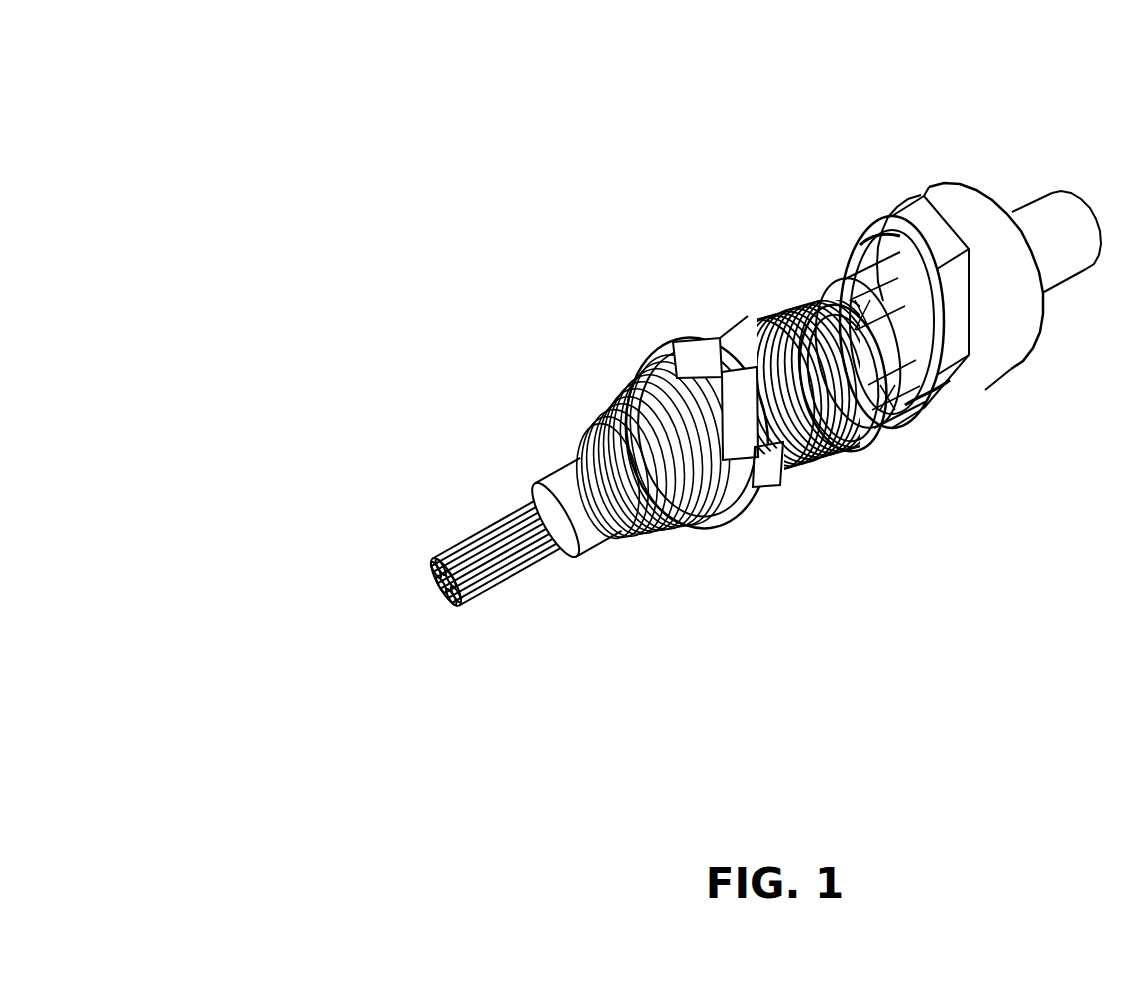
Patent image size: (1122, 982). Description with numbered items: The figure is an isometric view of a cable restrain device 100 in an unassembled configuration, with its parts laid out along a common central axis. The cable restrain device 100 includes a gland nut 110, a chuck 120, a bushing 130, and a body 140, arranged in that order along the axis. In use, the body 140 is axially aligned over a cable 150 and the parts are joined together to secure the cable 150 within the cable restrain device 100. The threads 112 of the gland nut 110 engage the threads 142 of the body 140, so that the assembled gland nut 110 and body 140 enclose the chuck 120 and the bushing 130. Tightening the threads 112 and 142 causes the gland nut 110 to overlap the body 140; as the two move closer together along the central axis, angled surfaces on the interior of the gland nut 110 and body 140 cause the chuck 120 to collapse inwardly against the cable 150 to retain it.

The cable restrain device 100 is at (666, 329).
The gland nut 110 is at (952, 287).
The threads 112 is at (933, 400).
The chuck 120 is at (828, 269).
The bushing 130 is at (750, 301).
The body 140 is at (704, 388).
The threads 142 is at (812, 462).
The cable 150 is at (500, 478).